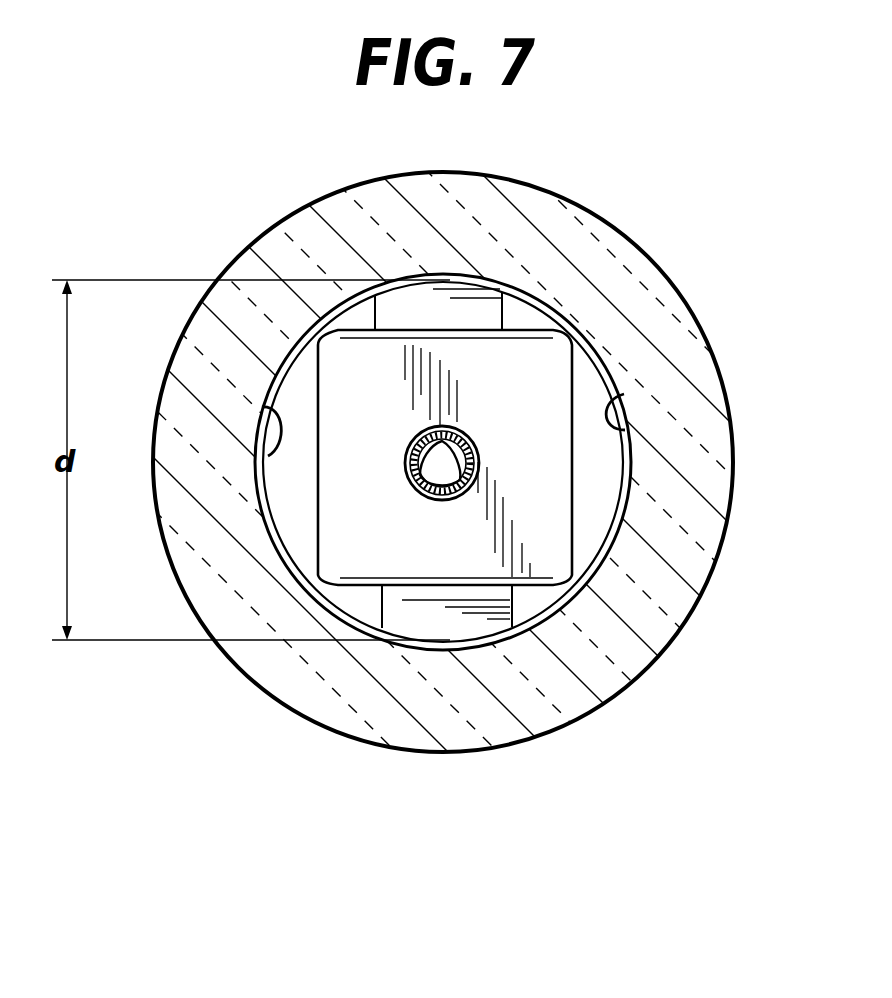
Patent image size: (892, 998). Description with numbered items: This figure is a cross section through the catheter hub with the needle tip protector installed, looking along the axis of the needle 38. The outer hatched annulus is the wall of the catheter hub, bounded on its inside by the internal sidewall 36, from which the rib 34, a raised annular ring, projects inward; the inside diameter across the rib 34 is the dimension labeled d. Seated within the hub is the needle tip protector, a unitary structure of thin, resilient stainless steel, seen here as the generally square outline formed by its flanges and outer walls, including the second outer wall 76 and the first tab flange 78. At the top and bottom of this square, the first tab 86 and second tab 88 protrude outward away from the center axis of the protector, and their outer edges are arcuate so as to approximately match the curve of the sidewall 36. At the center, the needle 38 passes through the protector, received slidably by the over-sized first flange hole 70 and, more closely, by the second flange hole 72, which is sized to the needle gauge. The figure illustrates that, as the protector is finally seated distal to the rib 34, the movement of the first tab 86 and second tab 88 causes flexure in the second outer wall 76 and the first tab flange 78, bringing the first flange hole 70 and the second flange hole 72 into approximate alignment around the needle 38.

The rib 34 is at (268, 447).
The internal sidewall 36 is at (606, 400).
The needle 38 is at (480, 466).
The first flange hole 70 is at (468, 485).
The second flange hole 72 is at (413, 481).
The second outer wall 76 is at (577, 511).
The first tab flange 78 is at (528, 328).
The first tab 86 is at (451, 300).
The second tab 88 is at (433, 623).